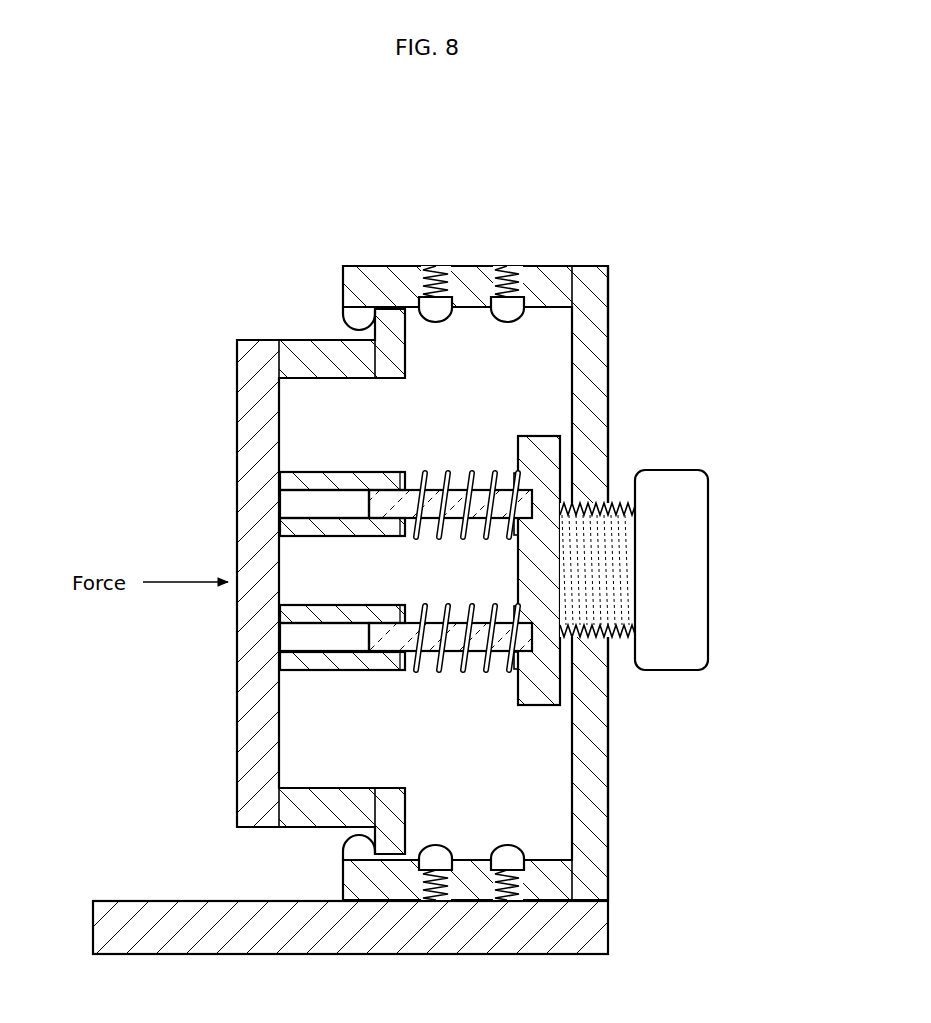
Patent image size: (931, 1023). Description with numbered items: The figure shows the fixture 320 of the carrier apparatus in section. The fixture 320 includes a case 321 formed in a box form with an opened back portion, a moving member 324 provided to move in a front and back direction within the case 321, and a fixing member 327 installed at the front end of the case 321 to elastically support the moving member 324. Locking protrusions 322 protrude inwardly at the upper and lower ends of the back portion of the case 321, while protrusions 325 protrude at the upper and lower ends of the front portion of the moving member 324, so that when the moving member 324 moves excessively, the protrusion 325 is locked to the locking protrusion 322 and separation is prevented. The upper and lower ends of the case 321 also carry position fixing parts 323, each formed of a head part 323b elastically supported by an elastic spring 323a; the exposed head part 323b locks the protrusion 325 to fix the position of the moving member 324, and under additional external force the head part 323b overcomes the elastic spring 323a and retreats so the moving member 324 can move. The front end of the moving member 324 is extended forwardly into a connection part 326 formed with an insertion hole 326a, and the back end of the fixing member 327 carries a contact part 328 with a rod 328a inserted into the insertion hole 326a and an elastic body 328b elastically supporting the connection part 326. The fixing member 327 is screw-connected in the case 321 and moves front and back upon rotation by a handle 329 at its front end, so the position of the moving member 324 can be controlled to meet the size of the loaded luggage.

The fixture 320 is at (465, 511).
The case 321 is at (592, 355).
The locking protrusion 322 is at (343, 320).
The position fixing part 323 is at (434, 560).
The elastic spring 323a is at (426, 266).
The head part 323b is at (410, 307).
The moving member 324 is at (246, 497).
The protrusion 325 is at (387, 828).
The connection part 326 is at (465, 511).
The insertion hole 326a is at (300, 639).
The fixing member 327 is at (613, 555).
The contact part 328 is at (465, 511).
The rod 328a is at (422, 640).
The elastic body 328b is at (517, 660).
The handle 329 is at (693, 617).